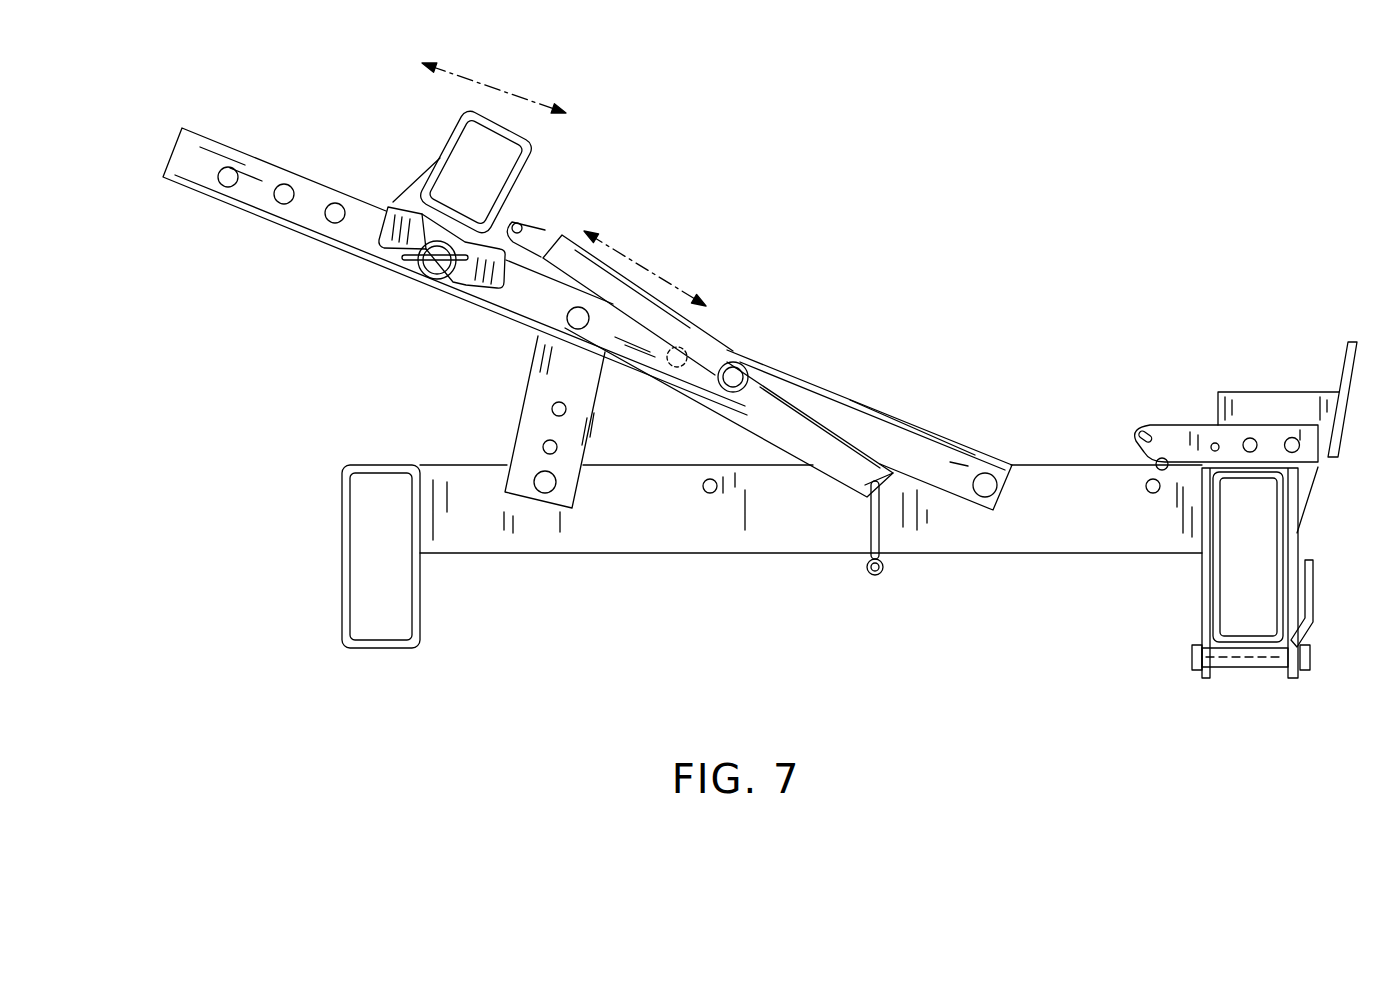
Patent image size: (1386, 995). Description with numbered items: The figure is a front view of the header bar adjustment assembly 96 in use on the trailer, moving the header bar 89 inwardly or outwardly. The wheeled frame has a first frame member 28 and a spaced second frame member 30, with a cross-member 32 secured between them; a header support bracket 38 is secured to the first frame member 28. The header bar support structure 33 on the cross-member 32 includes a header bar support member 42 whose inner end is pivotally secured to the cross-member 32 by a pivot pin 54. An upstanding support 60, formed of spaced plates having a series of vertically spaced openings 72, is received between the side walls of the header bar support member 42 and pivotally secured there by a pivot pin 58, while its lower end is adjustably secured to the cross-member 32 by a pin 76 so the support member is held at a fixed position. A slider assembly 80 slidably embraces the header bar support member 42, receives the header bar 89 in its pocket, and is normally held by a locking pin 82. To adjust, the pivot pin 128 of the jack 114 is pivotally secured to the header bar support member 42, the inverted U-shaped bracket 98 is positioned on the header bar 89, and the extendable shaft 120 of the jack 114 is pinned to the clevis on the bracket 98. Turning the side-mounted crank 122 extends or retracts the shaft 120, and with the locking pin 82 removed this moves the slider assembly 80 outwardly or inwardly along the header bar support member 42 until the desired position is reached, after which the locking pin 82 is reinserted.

The first frame member 28 is at (1228, 584).
The second frame member 30 is at (403, 595).
The cross-member 32 is at (1010, 540).
The header bar support structure 33 is at (604, 319).
The header support bracket 38 is at (1153, 428).
The header bar support member 42 is at (850, 385).
The pivot pin 54 is at (992, 476).
The pivot pin 58 is at (566, 318).
The upstanding support 60 is at (536, 470).
The vertically spaced openings 72 is at (542, 447).
The pin 76 is at (556, 485).
The slider assembly 80 is at (388, 248).
The locking pin 82 is at (425, 280).
The header bar 89 is at (473, 192).
The header bar adjustment assembly 96 is at (729, 475).
The inverted U-shaped bracket 98 is at (440, 120).
The jack 114 is at (820, 476).
The shaft 120 is at (532, 230).
The crank 122 is at (866, 532).
The pivot pin 128 is at (748, 362).